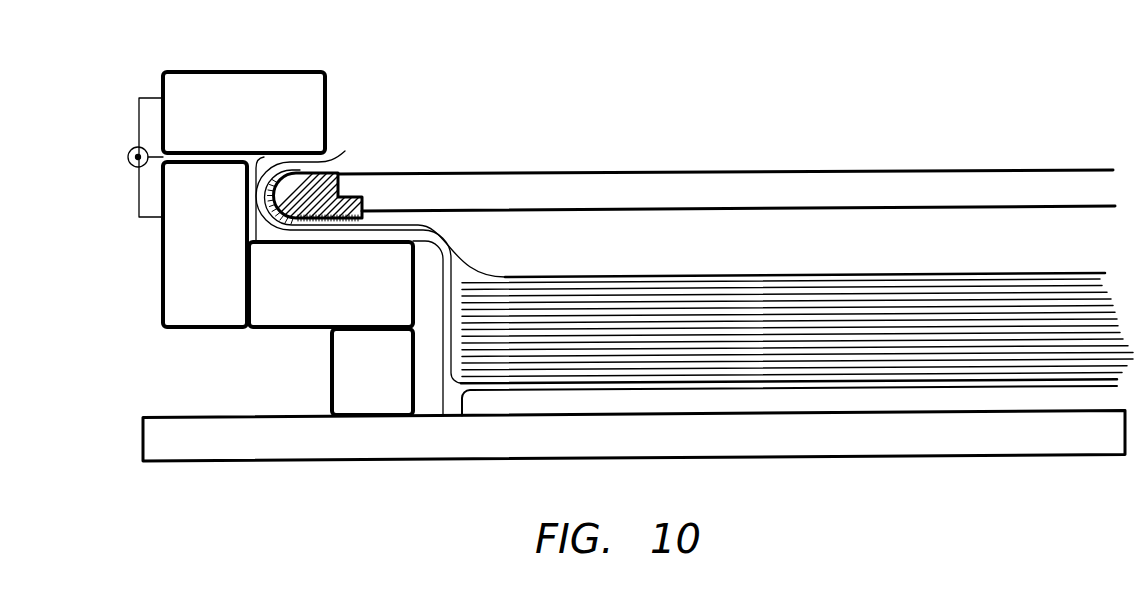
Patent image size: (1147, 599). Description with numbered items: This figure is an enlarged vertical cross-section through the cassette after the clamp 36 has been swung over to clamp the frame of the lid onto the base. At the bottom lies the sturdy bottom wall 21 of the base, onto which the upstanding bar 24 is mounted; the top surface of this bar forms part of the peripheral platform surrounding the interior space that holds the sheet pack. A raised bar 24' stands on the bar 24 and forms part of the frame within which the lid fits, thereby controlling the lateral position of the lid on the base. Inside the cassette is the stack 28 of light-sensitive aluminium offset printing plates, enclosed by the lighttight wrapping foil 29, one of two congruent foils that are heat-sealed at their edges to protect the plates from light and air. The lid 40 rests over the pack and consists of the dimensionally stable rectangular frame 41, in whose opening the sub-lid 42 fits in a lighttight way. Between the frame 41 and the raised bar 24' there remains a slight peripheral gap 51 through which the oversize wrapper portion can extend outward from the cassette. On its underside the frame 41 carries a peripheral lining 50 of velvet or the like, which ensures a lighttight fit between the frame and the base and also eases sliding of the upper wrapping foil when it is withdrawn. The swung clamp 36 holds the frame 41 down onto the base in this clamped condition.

The bottom wall 21 is at (163, 442).
The upstanding bar 24 is at (322, 360).
The raised bar 24' is at (151, 212).
The stack of plates 28 is at (823, 323).
The wrapping foil 29 is at (485, 266).
The clamp 36 is at (232, 108).
The lid 40 is at (555, 172).
The frame 41 is at (340, 174).
The sub-lid 42 is at (962, 184).
The peripheral lining 50 is at (295, 227).
The peripheral gap 51 is at (256, 161).